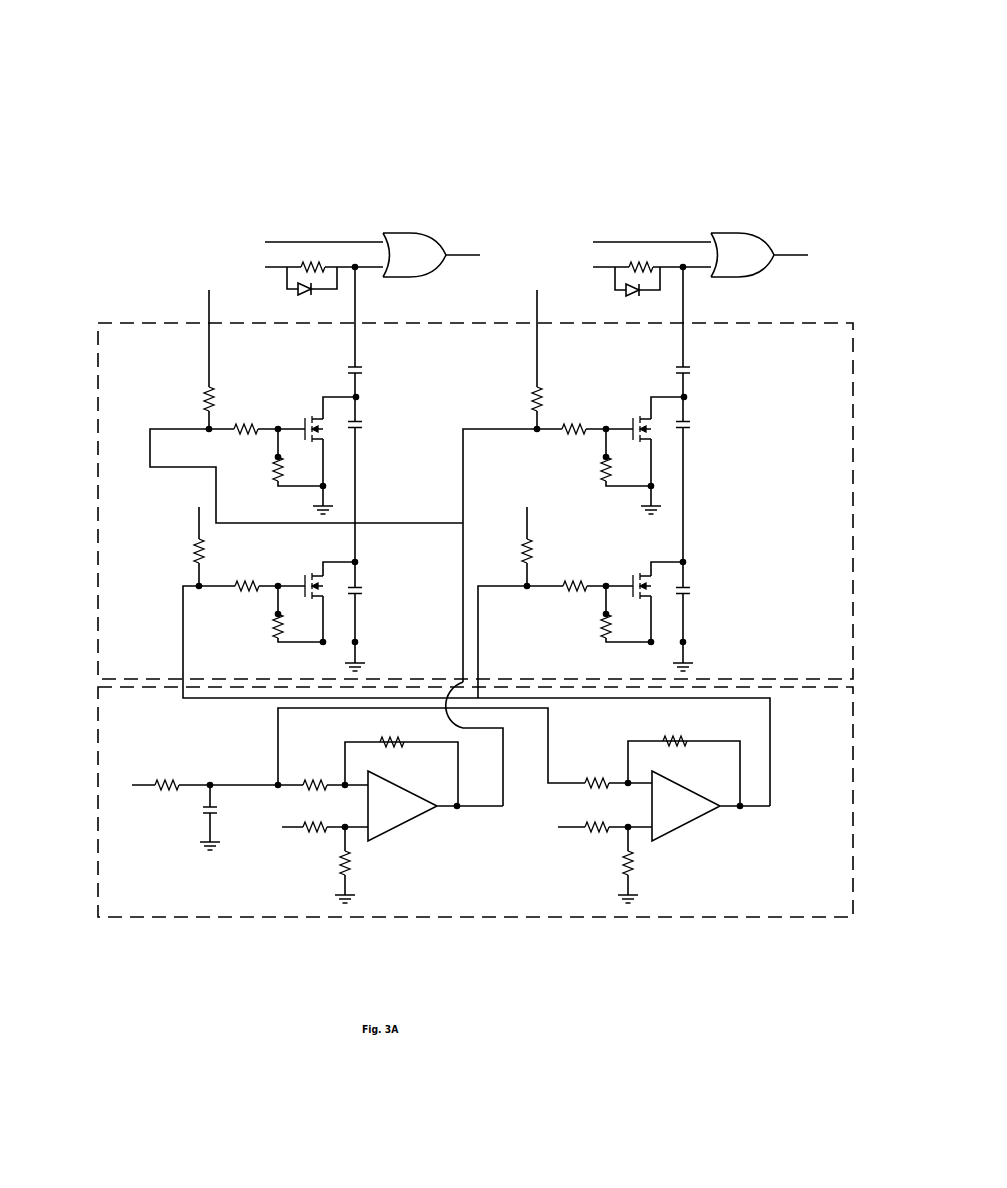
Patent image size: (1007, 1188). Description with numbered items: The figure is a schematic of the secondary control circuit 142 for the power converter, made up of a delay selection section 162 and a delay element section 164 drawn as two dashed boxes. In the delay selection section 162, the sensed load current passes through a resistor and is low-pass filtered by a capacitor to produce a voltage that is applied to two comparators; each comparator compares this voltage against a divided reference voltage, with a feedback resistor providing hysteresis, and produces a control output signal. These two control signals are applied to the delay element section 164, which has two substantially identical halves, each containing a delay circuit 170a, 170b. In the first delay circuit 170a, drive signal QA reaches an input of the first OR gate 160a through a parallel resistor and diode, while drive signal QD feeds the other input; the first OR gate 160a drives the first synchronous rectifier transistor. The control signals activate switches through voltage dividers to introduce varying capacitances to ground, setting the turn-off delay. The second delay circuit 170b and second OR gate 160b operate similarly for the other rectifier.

The secondary control circuit 142 is at (578, 73).
The first OR gate 160a is at (390, 232).
The second OR gate 160b is at (725, 232).
The first delay circuit 170a is at (427, 318).
The second delay circuit 170b is at (722, 318).
The delay element section 164 is at (97, 453).
The delay selection section 162 is at (97, 739).